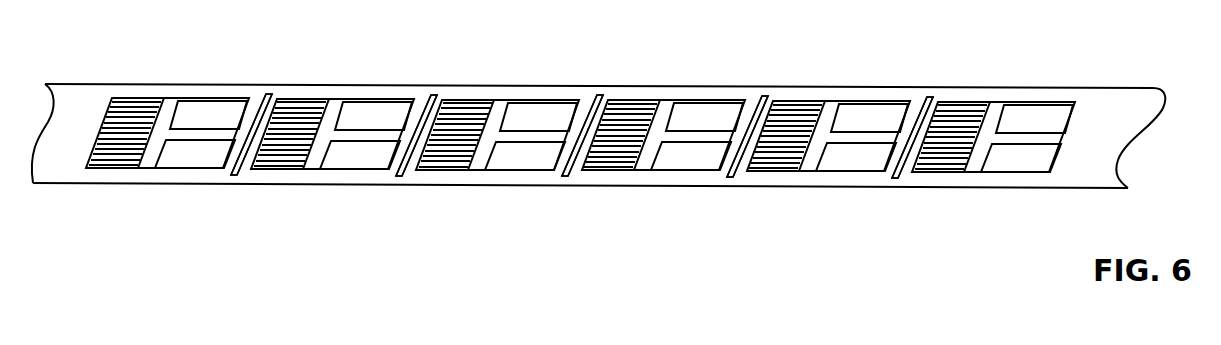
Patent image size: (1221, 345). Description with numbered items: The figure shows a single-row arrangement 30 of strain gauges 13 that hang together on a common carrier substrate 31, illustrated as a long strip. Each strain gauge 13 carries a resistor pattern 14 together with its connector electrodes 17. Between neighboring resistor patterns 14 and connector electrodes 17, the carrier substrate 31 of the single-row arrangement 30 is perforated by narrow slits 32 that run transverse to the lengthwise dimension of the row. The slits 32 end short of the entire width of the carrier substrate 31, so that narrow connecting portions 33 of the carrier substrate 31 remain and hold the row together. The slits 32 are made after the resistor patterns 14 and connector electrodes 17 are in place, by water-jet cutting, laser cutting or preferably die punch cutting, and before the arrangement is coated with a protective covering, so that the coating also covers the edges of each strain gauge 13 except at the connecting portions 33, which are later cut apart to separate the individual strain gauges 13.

The single-row arrangement 30 is at (1127, 78).
The carrier substrate 31 is at (1118, 142).
The strain gauge 13 is at (790, 177).
The resistor pattern 14 is at (958, 112).
The connector electrodes 17 is at (1022, 158).
The slits 32 is at (596, 93).
The connecting portions 33 is at (607, 84).